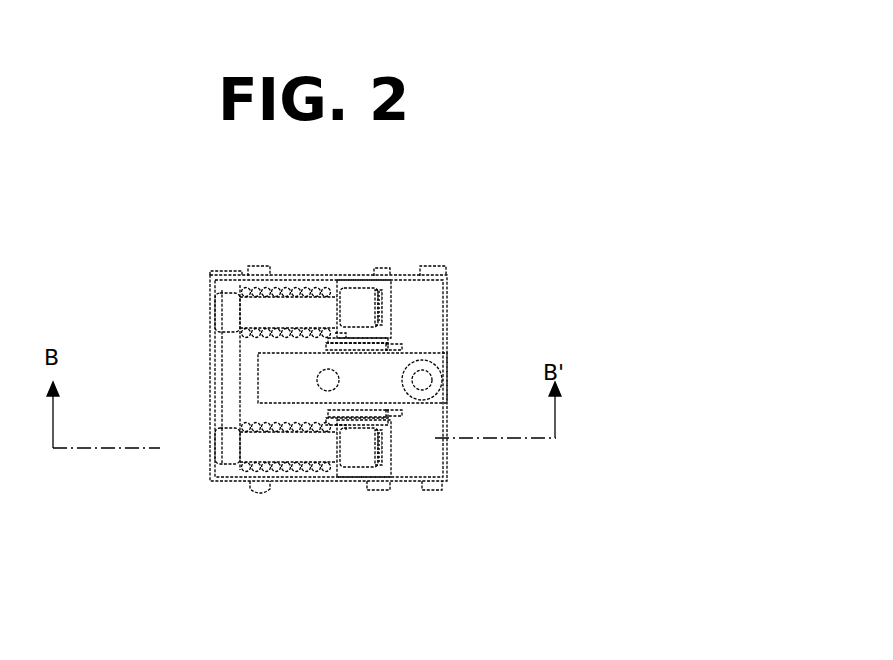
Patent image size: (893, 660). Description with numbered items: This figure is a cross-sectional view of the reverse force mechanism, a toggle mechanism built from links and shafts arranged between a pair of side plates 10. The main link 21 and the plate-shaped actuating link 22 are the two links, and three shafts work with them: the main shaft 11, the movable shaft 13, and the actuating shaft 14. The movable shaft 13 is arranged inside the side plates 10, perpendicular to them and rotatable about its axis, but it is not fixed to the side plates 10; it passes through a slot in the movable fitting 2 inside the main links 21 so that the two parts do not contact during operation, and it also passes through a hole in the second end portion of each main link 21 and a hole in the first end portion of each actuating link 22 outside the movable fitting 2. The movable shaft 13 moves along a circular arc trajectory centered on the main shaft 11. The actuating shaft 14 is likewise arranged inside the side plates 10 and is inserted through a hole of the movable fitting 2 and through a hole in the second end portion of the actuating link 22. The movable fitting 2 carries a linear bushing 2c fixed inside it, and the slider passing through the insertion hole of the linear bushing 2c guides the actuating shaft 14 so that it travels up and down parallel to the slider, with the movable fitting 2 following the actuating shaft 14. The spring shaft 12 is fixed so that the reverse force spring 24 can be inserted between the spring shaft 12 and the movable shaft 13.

The movable fitting 2 is at (446, 400).
The linear bushing 2c is at (442, 366).
The side plates 10 is at (278, 275).
The main shaft 11 is at (373, 270).
The spring shaft 12 is at (215, 273).
The movable shaft 13 is at (357, 463).
The actuating shaft 14 is at (395, 420).
The main link 21 is at (404, 348).
The actuating link 22 is at (400, 341).
The reverse force spring 24 is at (275, 470).